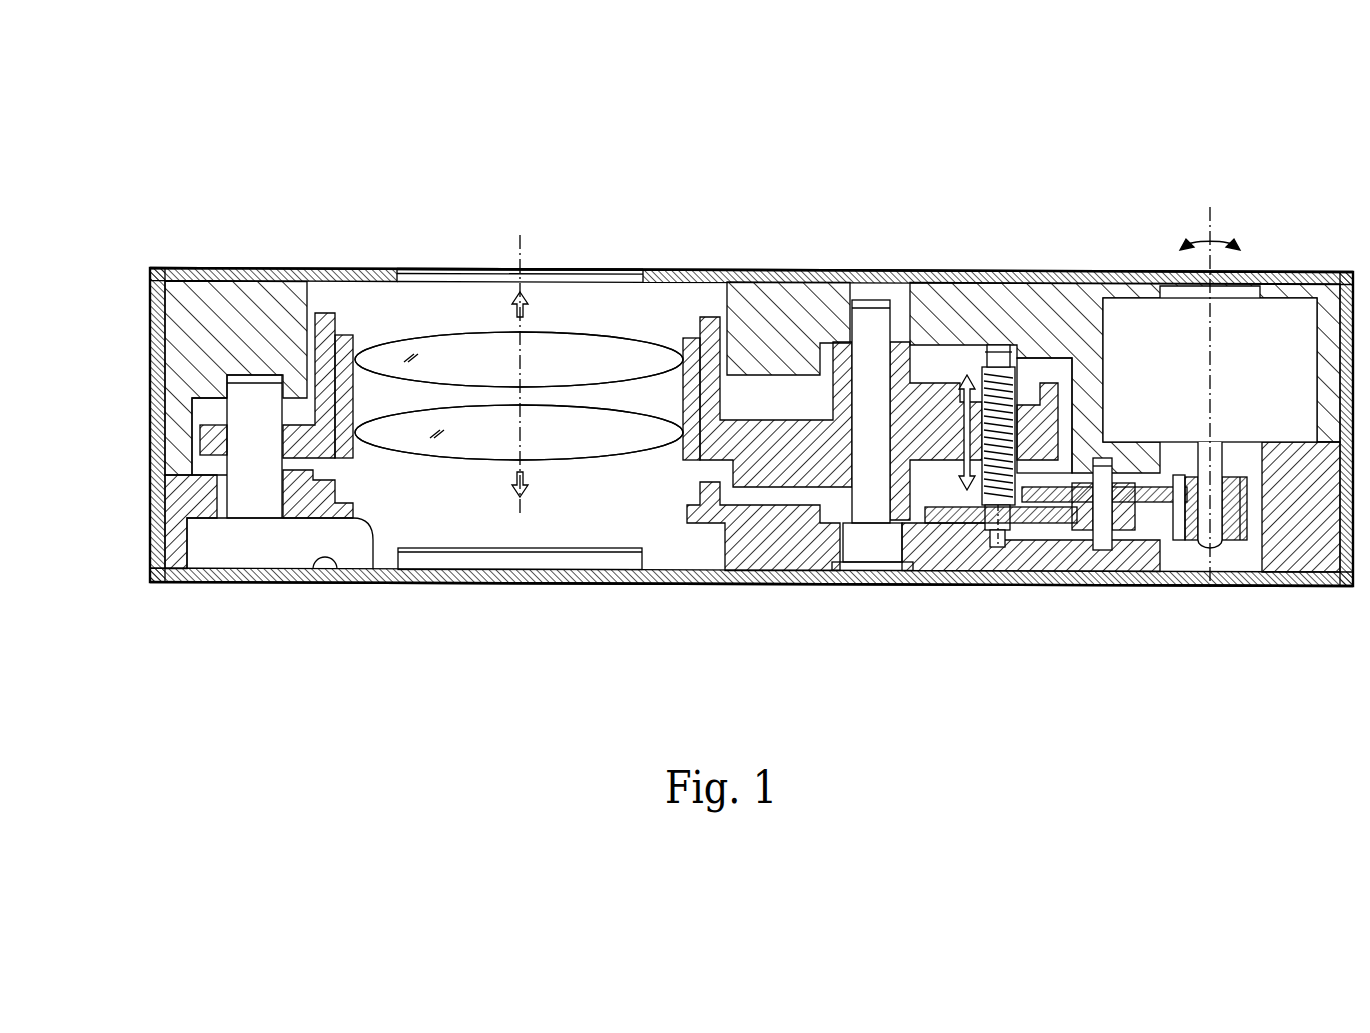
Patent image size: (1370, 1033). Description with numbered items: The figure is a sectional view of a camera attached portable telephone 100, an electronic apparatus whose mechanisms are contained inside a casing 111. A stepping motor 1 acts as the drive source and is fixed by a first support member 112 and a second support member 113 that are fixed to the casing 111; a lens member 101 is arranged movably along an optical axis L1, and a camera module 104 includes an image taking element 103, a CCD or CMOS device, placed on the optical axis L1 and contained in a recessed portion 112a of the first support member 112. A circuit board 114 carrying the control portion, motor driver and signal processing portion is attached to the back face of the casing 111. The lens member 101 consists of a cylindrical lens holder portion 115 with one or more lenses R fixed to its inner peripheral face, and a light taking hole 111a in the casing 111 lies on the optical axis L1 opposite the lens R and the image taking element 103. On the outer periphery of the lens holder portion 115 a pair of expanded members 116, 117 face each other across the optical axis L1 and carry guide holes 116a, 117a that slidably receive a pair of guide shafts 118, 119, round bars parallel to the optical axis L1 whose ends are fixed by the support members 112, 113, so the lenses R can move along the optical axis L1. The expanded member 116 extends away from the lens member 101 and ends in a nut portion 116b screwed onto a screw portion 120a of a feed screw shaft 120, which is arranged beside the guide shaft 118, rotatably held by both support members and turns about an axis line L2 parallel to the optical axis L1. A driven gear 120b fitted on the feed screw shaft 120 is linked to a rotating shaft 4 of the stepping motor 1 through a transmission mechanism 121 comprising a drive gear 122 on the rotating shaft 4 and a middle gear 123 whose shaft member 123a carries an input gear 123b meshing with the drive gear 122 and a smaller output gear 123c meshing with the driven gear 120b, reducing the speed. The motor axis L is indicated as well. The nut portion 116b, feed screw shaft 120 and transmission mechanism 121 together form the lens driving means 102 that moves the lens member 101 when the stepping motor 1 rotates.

The camera attached portable telephone 100 is at (1250, 186).
The stepping motor 1 is at (1297, 296).
The rotating shaft 4 is at (1238, 542).
The motor rotation axis L is at (1210, 213).
The optical axis L1 is at (520, 255).
The axis line L2 is at (995, 588).
The lens R is at (572, 340).
The lens member 101 is at (640, 334).
The lens driving means 102 is at (924, 358).
The image taking element 103 is at (512, 555).
The camera module 104 is at (192, 257).
The casing 111 is at (150, 462).
The light taking hole 111a is at (410, 269).
The first support member 112 is at (193, 552).
The recessed portion 112a is at (358, 465).
The second support member 113 is at (990, 340).
The circuit board 114 is at (350, 515).
The lens holder portion 115 is at (355, 345).
The expanded member 116 is at (795, 478).
The guide hole 116a is at (868, 470).
The nut portion 116b is at (1045, 412).
The expanded member 117 is at (296, 450).
The guide hole 117a is at (238, 455).
The guide shaft 118 is at (885, 500).
The guide shaft 119 is at (240, 410).
The feed screw shaft 120 is at (985, 365).
The screw portion 120a is at (1018, 377).
The driven gear 120b is at (1032, 515).
The transmission mechanism 121 is at (1080, 596).
The drive gear 122 is at (1262, 525).
The middle gear 123 is at (1100, 552).
The shaft member 123a is at (1102, 470).
The input gear 123b is at (1180, 540).
The output gear 123c is at (1160, 505).